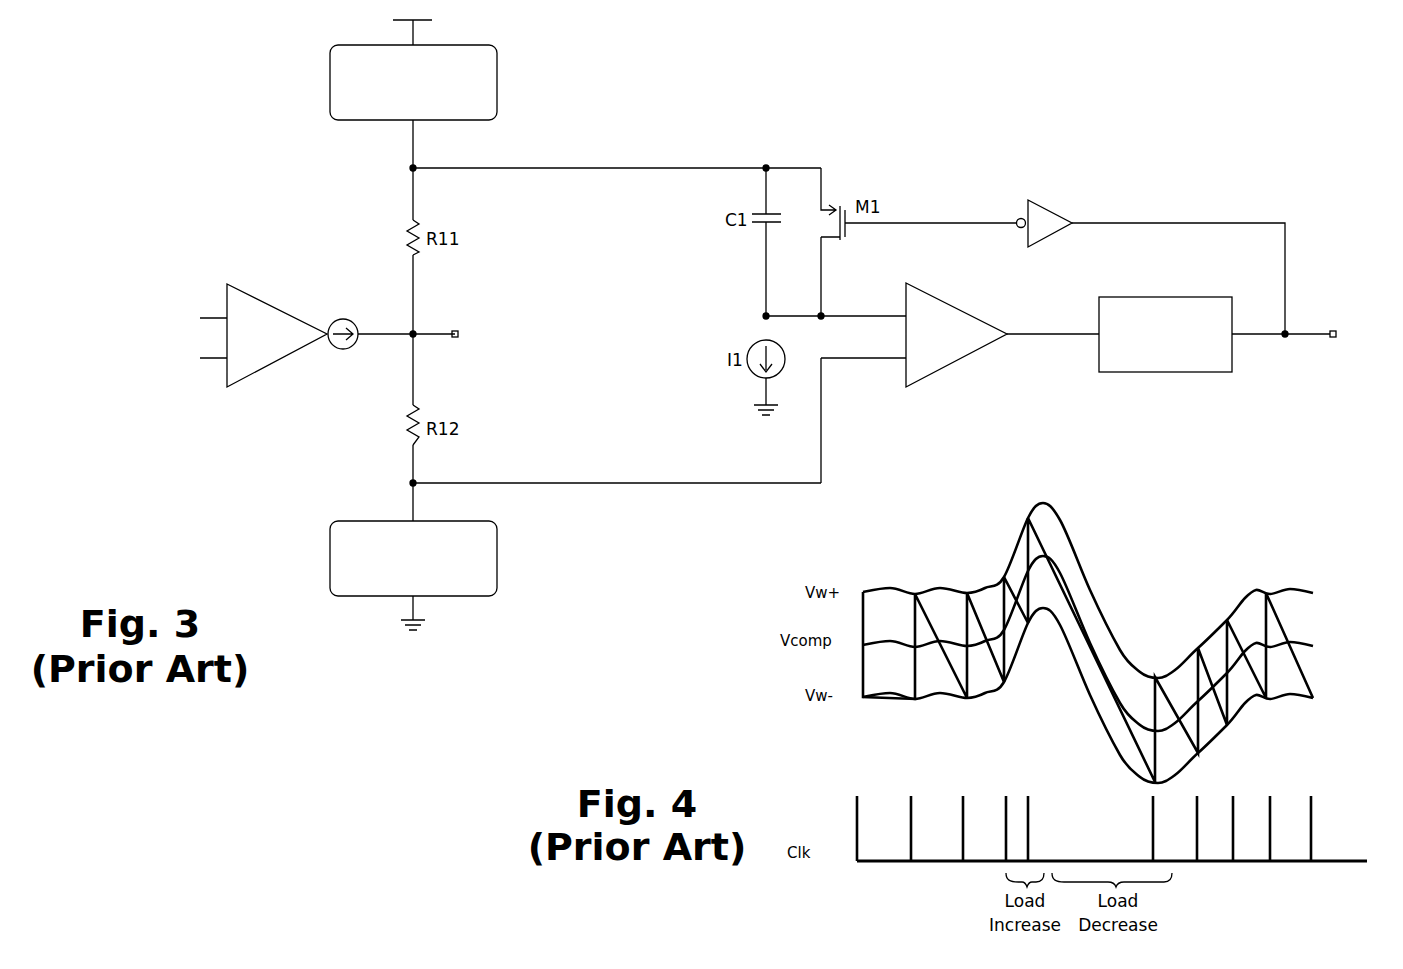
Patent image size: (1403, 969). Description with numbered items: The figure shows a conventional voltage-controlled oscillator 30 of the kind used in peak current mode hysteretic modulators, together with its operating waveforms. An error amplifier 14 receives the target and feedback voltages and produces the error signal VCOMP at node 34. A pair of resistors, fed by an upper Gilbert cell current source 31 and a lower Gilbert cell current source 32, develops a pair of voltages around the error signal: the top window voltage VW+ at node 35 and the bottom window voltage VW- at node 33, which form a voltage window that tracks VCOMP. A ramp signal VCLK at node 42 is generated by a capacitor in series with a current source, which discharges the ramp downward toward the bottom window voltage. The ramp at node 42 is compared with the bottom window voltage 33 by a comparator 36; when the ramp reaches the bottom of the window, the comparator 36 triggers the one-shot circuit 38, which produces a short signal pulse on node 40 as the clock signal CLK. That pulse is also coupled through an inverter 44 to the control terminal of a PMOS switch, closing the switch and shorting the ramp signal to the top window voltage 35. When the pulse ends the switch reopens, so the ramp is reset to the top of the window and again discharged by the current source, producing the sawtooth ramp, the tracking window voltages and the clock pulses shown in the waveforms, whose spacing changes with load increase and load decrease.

In FIG. 3, the error amplifier 14 is at (275, 365).
In FIG. 3, the voltage-controlled oscillator 30 is at (1160, 102).
In FIG. 3, the Gilbert cell current source 31 is at (356, 122).
In FIG. 3, the Gilbert cell current source 32 is at (356, 597).
In FIG. 3, the bottom window voltage VW- node 33 is at (564, 483).
In FIG. 4, the bottom window voltage VW- node 33 is at (1298, 700).
In FIG. 3, the error signal VCOMP node 34 is at (437, 333).
In FIG. 4, the error signal VCOMP node 34 is at (1313, 645).
In FIG. 3, the top window voltage VW+ node 35 is at (564, 168).
In FIG. 4, the top window voltage VW+ node 35 is at (1294, 589).
In FIG. 3, the comparator 36 is at (933, 378).
In FIG. 3, the one-shot circuit 38 is at (1193, 373).
In FIG. 3, the clock signal node 40 is at (1265, 336).
In FIG. 4, the clock signal node 40 is at (1352, 860).
In FIG. 3, the ramp signal VCLK node 42 is at (790, 318).
In FIG. 4, the ramp signal VCLK node 42 is at (1318, 690).
In FIG. 3, the inverter 44 is at (1047, 238).